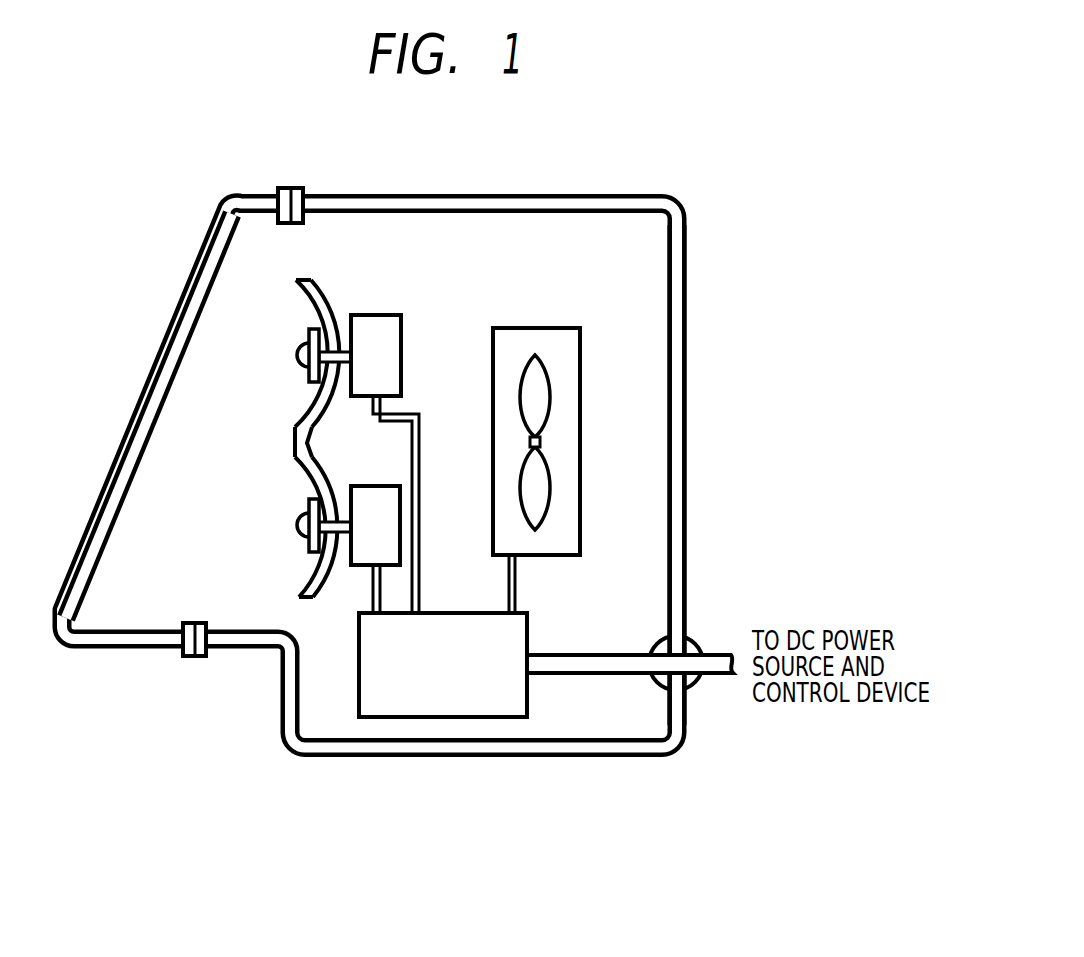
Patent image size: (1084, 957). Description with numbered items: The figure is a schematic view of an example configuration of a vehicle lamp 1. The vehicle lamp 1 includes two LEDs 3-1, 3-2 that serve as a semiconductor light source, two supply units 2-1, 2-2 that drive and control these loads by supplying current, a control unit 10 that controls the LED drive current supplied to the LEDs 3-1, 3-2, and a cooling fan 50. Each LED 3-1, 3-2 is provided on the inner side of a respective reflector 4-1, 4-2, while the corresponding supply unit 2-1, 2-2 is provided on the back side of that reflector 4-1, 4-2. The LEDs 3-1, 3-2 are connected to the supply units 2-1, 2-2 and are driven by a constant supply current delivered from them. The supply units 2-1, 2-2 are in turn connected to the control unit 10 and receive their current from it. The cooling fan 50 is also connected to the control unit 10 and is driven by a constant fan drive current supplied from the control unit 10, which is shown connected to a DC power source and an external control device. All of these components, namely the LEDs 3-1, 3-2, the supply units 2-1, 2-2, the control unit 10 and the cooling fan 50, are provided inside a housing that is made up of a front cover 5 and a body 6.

The vehicle lamp 1 is at (425, 760).
The front cover 5 is at (128, 452).
The body 6 is at (688, 311).
The reflector 4-1 is at (319, 283).
The reflector 4-2 is at (307, 600).
The LED 3-1 is at (298, 362).
The LED 3-2 is at (298, 532).
The supply unit 2-1 is at (387, 314).
The supply unit 2-2 is at (397, 485).
The cooling fan 50 is at (543, 326).
The control unit 10 is at (530, 633).